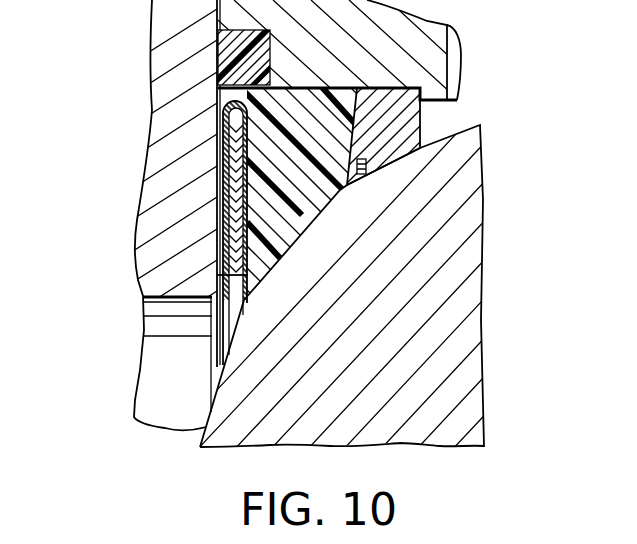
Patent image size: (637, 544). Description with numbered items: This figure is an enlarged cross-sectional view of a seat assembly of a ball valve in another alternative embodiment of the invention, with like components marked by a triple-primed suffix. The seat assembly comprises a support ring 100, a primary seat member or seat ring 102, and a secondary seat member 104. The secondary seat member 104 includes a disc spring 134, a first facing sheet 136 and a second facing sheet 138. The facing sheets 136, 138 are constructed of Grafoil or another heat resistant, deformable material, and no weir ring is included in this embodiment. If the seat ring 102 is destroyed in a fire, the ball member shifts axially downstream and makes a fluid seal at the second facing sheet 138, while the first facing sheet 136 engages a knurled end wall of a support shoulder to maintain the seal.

The support ring 100 is at (422, 108).
The seat ring 102 is at (308, 202).
The secondary seat member 104 is at (206, 133).
The disc spring 134 is at (225, 176).
The first facing sheet 136 is at (228, 217).
The second facing sheet 138 is at (229, 258).